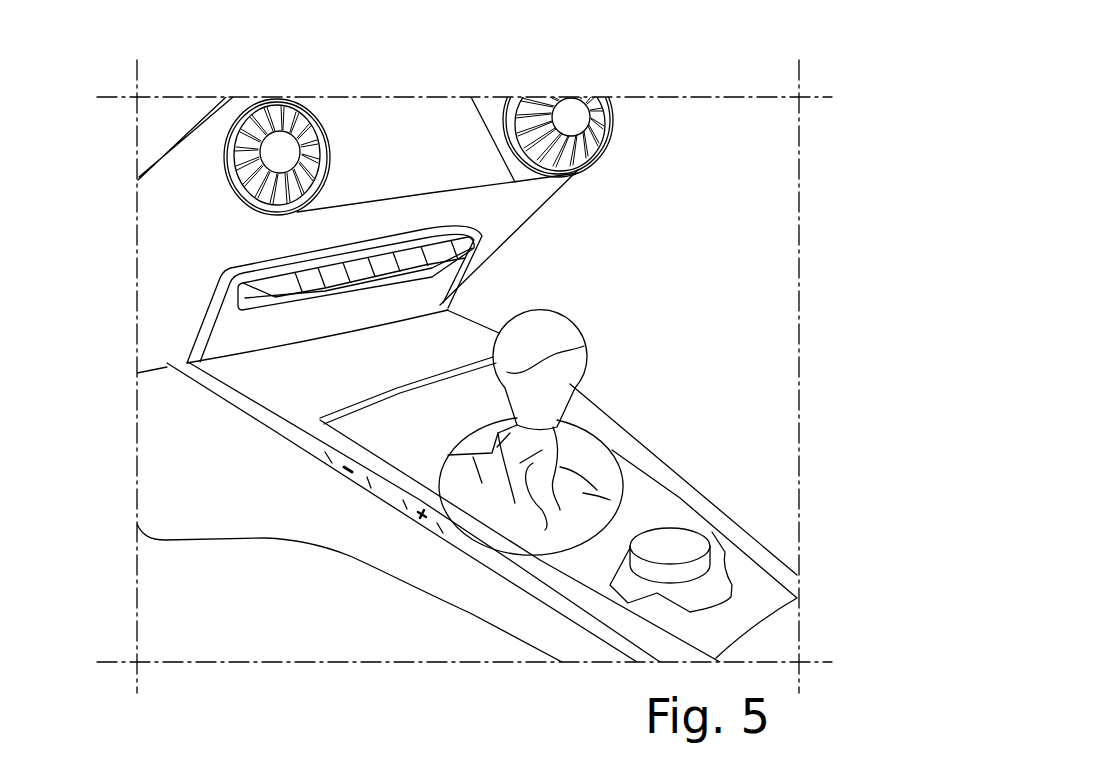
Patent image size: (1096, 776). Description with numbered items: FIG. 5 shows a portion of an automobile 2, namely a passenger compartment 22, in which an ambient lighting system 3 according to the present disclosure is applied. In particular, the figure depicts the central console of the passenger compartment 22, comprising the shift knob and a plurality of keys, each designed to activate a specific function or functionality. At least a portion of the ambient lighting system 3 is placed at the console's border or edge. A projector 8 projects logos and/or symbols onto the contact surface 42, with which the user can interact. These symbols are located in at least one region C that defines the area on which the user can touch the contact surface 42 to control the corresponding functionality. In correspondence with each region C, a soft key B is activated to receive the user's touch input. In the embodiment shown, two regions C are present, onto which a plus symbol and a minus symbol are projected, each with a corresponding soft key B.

The automobile 2 is at (810, 103).
The passenger compartment 22 is at (817, 317).
The ambient lighting system 3 is at (235, 247).
The projector 8 is at (168, 392).
The contact surface 42 is at (368, 484).
The soft key B is at (362, 443).
The region C is at (333, 485).